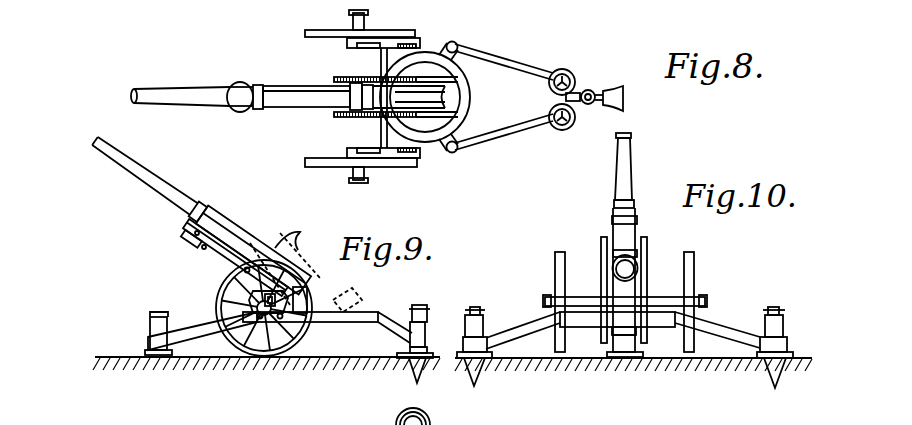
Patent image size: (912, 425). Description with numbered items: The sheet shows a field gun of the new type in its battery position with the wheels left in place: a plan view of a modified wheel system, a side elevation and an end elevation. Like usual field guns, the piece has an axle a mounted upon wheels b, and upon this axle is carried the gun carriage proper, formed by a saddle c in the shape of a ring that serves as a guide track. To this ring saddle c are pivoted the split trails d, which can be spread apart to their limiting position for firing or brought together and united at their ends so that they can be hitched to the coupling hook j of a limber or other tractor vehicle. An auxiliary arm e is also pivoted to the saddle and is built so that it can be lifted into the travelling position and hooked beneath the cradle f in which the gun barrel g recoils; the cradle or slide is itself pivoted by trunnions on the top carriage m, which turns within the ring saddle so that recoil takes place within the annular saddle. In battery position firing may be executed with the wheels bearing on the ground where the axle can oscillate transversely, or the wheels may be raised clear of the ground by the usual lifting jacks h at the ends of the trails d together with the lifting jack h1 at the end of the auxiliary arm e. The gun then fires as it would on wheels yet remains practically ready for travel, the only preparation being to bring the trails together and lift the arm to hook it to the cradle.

In FIG. 8, the axle a is at (383, 57).
In FIG. 9, the axle a is at (254, 297).
In FIG. 10, the axle a is at (653, 297).
In FIG. 8, the wheels b is at (310, 33).
In FIG. 9, the wheels b is at (247, 350).
In FIG. 10, the wheels b is at (557, 263).
In FIG. 8, the saddle c is at (464, 97).
In FIG. 9, the saddle c is at (327, 318).
In FIG. 10, the saddle c is at (657, 321).
In FIG. 8, the split trails d is at (520, 70).
In FIG. 9, the split trails d is at (385, 328).
In FIG. 10, the split trails d is at (517, 340).
In FIG. 8, the arm e is at (232, 85).
In FIG. 9, the arm e is at (204, 333).
In FIG. 8, the cradle f is at (293, 106).
In FIG. 9, the cradle f is at (190, 225).
In FIG. 10, the cradle f is at (638, 219).
In FIG. 8, the gun barrel g is at (315, 100).
In FIG. 9, the gun barrel g is at (177, 193).
In FIG. 10, the gun barrel g is at (616, 211).
In FIG. 9, the lifting jacks h is at (411, 317).
In FIG. 10, the lifting jacks h is at (478, 322).
In FIG. 9, the lifting jack h1 is at (152, 322).
In FIG. 8, the coupling hook j is at (625, 88).
In FIG. 9, the top carriage m is at (350, 300).